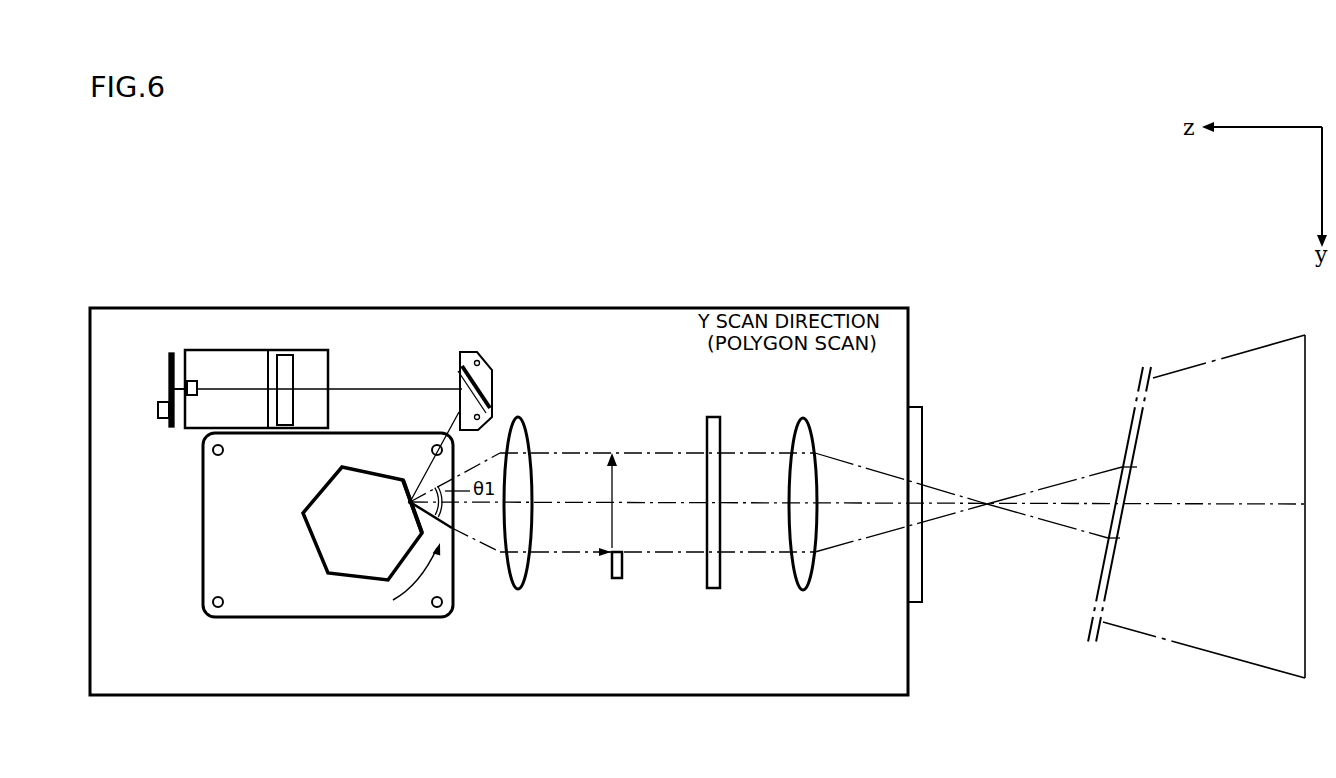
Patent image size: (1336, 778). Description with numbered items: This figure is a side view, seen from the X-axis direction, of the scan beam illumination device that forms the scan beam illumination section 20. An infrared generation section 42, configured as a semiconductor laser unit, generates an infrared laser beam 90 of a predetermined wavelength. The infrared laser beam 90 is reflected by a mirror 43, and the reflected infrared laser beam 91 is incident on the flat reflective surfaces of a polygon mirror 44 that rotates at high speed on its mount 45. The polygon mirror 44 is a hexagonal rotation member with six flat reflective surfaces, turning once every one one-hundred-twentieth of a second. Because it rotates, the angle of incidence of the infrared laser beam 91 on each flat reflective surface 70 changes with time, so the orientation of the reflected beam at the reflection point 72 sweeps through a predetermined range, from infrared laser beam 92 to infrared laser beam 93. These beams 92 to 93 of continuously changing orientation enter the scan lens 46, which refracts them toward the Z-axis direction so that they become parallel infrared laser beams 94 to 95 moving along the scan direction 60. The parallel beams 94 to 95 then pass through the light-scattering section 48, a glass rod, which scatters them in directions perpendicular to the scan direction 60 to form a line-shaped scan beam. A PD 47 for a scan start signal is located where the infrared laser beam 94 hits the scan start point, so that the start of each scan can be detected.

The scan beam illumination section 20 is at (622, 174).
The infrared generation section 42 is at (214, 346).
The mirror 43 is at (466, 352).
The polygon mirror 44 is at (346, 580).
The polygon mirror mount 45 is at (397, 618).
The scan lens 46 is at (514, 590).
The PD for scan start signal 47 is at (617, 580).
The light-scattering section 48 is at (714, 590).
The scan direction 60 is at (614, 516).
The flat reflective surface 70 is at (409, 490).
The beam reflection point 72 is at (409, 503).
The infrared laser beam 90 is at (378, 387).
The infrared laser beam 91 is at (452, 418).
The infrared laser beam 92 is at (473, 538).
The infrared laser beam 93 is at (497, 450).
The parallel infrared laser beam 94 is at (551, 552).
The parallel infrared laser beam 95 is at (557, 452).